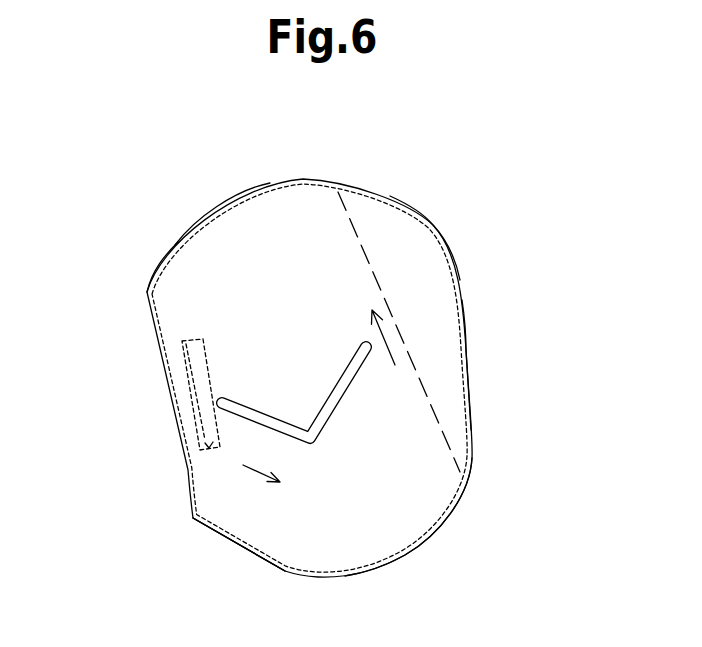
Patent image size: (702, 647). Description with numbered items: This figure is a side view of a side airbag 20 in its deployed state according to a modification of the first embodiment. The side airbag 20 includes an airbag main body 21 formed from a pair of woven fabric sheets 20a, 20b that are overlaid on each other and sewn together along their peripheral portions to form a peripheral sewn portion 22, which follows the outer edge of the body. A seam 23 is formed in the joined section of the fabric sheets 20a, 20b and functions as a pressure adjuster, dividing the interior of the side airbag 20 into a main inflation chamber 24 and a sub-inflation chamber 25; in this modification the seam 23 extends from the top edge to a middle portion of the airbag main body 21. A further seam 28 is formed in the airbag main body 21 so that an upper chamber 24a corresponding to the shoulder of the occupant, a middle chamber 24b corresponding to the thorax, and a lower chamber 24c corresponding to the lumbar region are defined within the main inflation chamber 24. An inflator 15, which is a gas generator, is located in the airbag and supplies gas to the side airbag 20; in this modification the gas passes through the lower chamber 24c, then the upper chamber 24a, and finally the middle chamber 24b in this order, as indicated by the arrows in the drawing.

The side airbag 20 is at (402, 143).
The fabric sheet 20a is at (260, 540).
The fabric sheet 20b is at (239, 575).
The airbag main body 21 is at (432, 222).
The peripheral sewn portion 22 is at (233, 203).
The seam 23 is at (420, 378).
The main inflation chamber 24 is at (220, 236).
The upper chamber 24a is at (188, 262).
The middle chamber 24b is at (303, 383).
The lower chamber 24c is at (402, 530).
The sub-inflation chamber 25 is at (437, 295).
The seam 28 is at (342, 417).
The inflator 15 is at (170, 384).